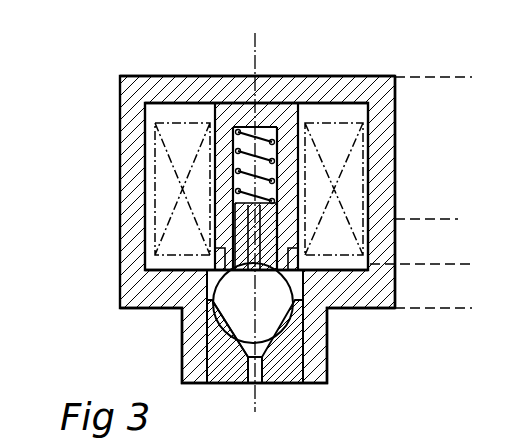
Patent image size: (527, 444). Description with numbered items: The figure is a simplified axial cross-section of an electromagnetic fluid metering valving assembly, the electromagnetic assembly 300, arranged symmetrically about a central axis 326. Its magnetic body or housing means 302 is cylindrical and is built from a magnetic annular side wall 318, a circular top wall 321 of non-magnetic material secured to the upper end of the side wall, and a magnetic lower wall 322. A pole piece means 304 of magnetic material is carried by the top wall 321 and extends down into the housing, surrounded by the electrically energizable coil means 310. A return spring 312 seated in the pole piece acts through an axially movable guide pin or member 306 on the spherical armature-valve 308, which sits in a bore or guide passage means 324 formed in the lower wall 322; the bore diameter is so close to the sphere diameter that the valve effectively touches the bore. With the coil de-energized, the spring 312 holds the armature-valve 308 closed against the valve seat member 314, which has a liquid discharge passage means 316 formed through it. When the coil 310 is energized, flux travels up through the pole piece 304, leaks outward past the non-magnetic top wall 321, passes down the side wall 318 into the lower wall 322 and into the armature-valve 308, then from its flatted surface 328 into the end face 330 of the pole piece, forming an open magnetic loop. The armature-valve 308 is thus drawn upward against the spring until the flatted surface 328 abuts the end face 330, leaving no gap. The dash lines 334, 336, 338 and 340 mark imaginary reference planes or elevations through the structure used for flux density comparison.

The electromagnetic assembly 300 is at (112, 84).
The magnetic body or housing means 302 is at (117, 114).
The pole piece means 304 is at (213, 158).
The guide pin or member 306 is at (232, 224).
The armature-valve 308 is at (240, 292).
The electrically energizable coil means 310 is at (150, 237).
The return spring 312 is at (240, 183).
The valve seat member 314 is at (281, 378).
The liquid discharge passage means 316 is at (268, 366).
The magnetic annular side wall 318 is at (397, 166).
The top wall 321 is at (330, 77).
The lower wall 322 is at (145, 298).
The bore or guide passage means 324 is at (236, 312).
The central axis 326 is at (256, 58).
The flatted surface 328 is at (247, 316).
The end face 330 is at (250, 262).
The dash line 334 is at (437, 310).
The dash line 336 is at (420, 265).
The dash line 338 is at (444, 220).
The dash line 340 is at (468, 79).